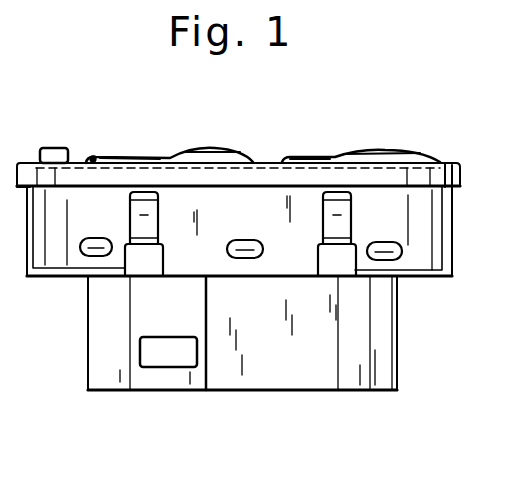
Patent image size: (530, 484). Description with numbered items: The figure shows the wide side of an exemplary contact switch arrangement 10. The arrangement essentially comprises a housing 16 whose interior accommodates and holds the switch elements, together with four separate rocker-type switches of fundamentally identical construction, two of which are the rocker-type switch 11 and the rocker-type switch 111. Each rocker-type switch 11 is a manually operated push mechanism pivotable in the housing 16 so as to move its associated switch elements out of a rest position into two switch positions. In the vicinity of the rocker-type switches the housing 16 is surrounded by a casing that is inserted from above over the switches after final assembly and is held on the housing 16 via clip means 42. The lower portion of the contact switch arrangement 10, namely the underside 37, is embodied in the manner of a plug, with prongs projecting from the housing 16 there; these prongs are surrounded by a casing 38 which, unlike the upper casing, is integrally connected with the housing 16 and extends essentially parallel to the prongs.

The contact switch arrangement 10 is at (476, 130).
The rocker-type switch 11 is at (100, 160).
The rocker-type switch 111 is at (392, 150).
The housing 16 is at (418, 278).
The underside 37 is at (330, 392).
The casing 38 is at (289, 368).
The clip means 42 is at (243, 246).